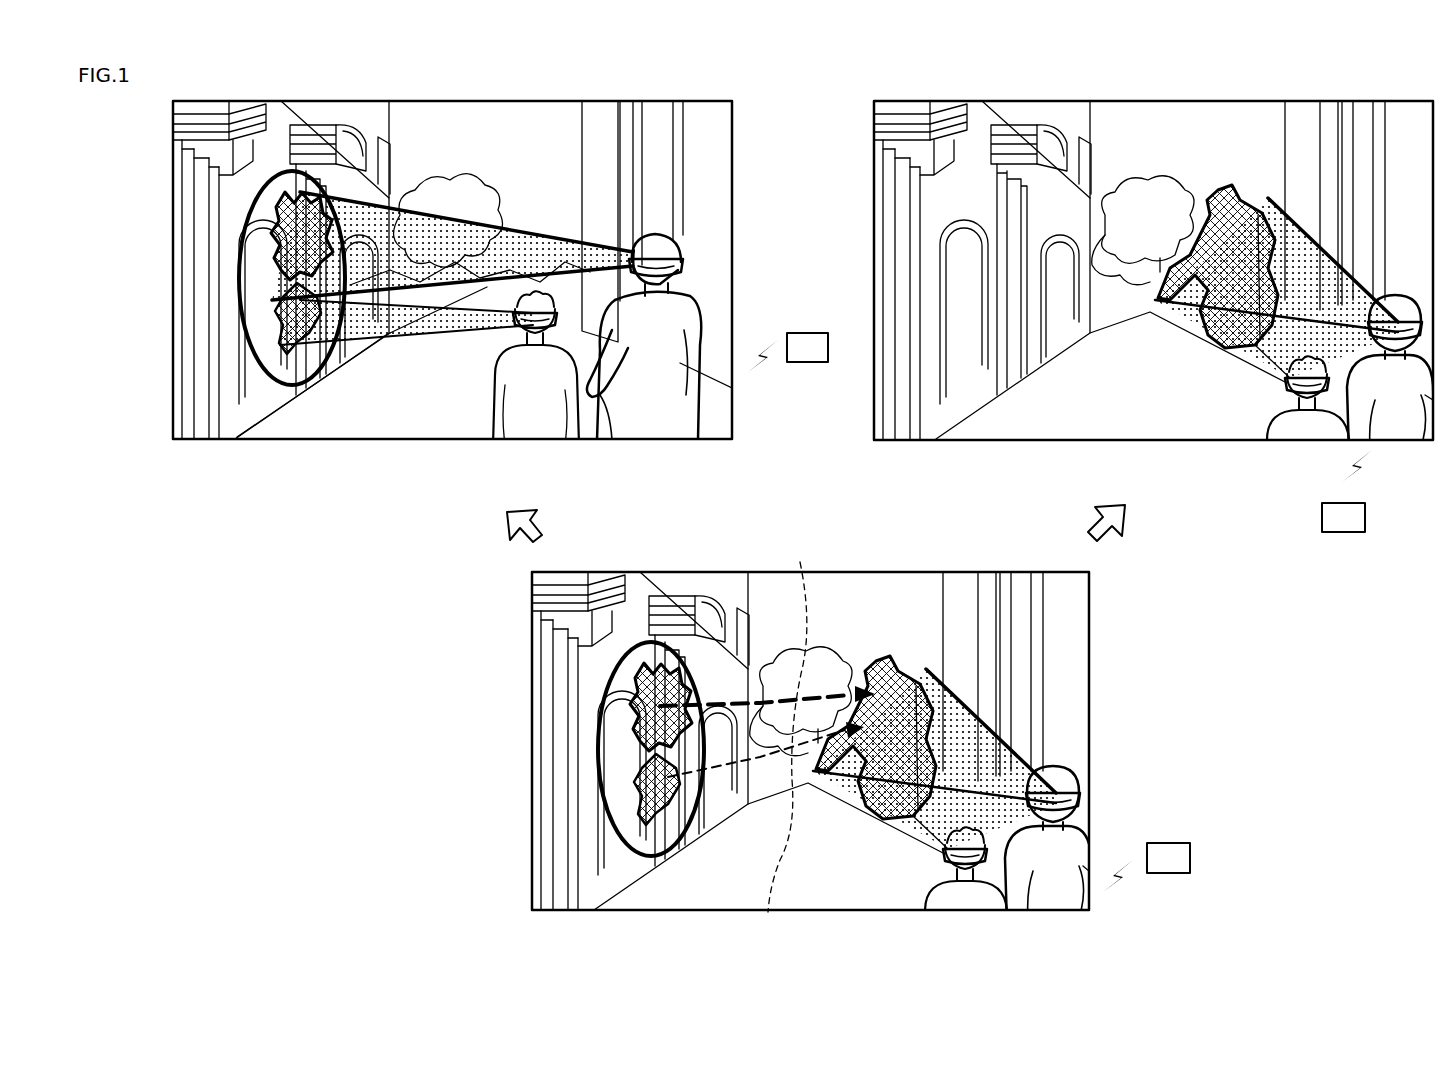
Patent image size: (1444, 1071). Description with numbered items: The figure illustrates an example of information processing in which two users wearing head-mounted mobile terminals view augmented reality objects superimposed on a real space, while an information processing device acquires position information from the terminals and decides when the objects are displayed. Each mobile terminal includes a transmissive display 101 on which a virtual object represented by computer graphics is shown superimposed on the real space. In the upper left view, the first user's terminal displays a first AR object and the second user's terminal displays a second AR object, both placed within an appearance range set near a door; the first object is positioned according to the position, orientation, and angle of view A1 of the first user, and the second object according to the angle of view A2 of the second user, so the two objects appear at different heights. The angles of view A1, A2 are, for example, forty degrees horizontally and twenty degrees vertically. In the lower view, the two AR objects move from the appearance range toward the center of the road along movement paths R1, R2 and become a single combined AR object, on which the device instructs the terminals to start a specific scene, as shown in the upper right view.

The angle of view A1 is at (540, 245).
The angle of view A2 is at (415, 318).
The movement path R1 is at (798, 658).
The movement path R2 is at (780, 870).
The display 101 is at (634, 258).